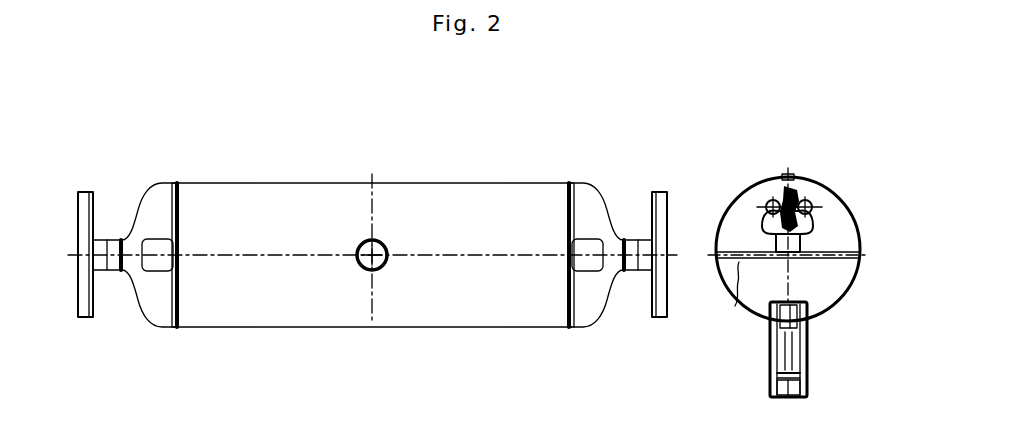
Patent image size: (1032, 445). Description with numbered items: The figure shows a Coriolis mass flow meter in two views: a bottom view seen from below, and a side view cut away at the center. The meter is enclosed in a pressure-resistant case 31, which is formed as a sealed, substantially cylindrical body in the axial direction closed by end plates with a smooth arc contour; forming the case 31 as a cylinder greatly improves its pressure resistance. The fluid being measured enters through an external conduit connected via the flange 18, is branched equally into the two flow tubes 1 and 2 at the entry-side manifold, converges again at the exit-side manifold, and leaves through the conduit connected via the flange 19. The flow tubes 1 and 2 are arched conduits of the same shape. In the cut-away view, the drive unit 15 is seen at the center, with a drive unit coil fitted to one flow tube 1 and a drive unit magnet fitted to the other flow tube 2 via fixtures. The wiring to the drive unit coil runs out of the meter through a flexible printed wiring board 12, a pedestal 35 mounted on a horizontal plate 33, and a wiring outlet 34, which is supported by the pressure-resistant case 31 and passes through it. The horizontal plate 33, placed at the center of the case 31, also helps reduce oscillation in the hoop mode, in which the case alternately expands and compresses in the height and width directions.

The flow tube 1 is at (752, 194).
The flow tube 2 is at (830, 194).
The flexible printed wiring board 12 is at (824, 220).
The drive unit 15 is at (795, 190).
The flange 18 is at (93, 316).
The flange 19 is at (652, 316).
The pressure-resistant case 31 is at (816, 190).
The horizontal plate 33 is at (735, 306).
The wiring outlet 34 is at (795, 352).
The pedestal 35 is at (829, 258).